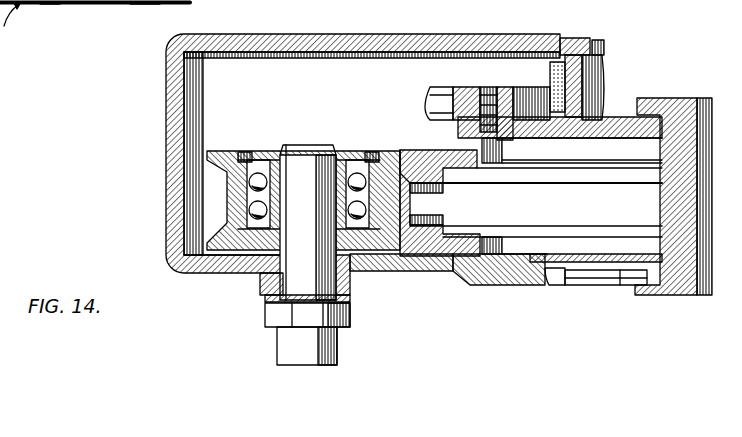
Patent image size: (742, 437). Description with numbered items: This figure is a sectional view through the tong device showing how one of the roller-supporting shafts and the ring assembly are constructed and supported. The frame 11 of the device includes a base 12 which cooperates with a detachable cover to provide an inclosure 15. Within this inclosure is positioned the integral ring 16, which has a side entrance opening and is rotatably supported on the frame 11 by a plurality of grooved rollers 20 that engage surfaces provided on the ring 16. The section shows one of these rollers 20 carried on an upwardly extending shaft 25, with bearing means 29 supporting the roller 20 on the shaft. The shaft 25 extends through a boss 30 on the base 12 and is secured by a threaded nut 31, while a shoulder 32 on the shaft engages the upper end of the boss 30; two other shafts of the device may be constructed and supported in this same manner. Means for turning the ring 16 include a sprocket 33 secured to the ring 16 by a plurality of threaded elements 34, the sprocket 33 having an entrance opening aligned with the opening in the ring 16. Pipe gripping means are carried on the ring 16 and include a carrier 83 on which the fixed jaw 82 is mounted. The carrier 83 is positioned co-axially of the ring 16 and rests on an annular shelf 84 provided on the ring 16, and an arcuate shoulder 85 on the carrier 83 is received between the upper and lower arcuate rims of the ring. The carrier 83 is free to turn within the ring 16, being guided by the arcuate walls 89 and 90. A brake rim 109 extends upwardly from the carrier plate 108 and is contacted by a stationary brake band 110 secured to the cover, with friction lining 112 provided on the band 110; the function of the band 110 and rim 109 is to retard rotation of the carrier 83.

The frame 11 is at (292, 30).
The base 12 is at (182, 250).
The inclosure 15 is at (203, 108).
The integral ring 16 is at (516, 291).
The grooved rollers 20 is at (228, 205).
The shaft 25 is at (336, 283).
The bearing means 29 is at (262, 177).
The boss 30 is at (266, 300).
The threaded nut 31 is at (322, 343).
The shoulder 32 is at (280, 270).
The sprocket 33 is at (430, 103).
The threaded elements 34 is at (487, 94).
The fixed jaw 82 is at (690, 102).
The carrier 83 is at (622, 286).
The annular shelf 84 is at (575, 284).
The arcuate shoulder 85 is at (50, 5).
The arcuate wall 89 is at (548, 139).
The arcuate wall 90 is at (553, 280).
The carrier plate 108 is at (143, 5).
The brake rim 109 is at (590, 86).
The brake band 110 is at (558, 68).
The friction lining 112 is at (596, 42).